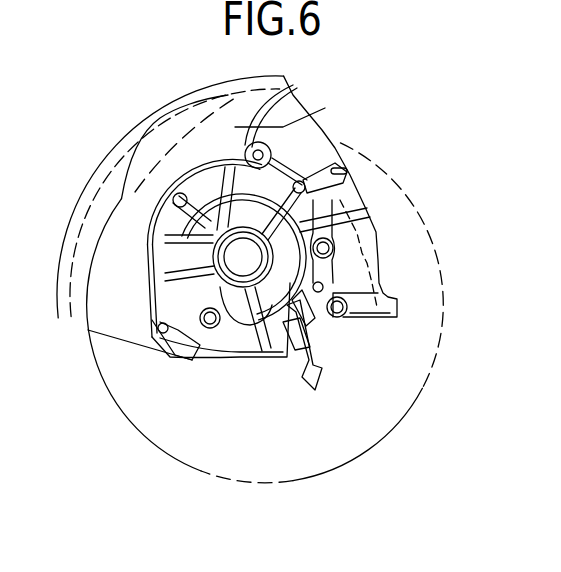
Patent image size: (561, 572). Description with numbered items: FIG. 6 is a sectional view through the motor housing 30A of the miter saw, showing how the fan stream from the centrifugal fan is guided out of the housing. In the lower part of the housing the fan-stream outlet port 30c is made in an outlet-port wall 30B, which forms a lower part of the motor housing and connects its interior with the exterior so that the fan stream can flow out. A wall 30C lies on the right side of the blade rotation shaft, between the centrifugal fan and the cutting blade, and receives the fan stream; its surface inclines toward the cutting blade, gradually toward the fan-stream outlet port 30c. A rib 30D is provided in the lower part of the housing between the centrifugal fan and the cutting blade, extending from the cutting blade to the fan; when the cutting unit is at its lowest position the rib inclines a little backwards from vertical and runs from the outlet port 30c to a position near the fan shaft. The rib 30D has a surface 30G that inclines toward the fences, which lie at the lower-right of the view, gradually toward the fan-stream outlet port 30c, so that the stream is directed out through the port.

The motor housing 30A is at (192, 360).
The outlet-port wall 30B is at (317, 330).
The wall 30C is at (297, 360).
The fan-stream outlet port 30c is at (310, 347).
The rib 30D is at (300, 267).
The surface 30G is at (300, 290).